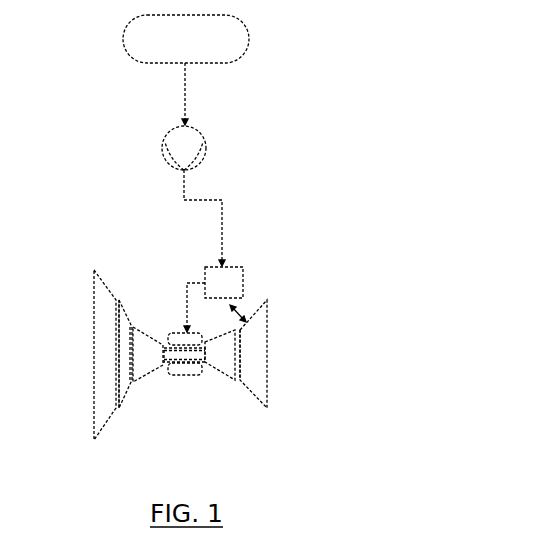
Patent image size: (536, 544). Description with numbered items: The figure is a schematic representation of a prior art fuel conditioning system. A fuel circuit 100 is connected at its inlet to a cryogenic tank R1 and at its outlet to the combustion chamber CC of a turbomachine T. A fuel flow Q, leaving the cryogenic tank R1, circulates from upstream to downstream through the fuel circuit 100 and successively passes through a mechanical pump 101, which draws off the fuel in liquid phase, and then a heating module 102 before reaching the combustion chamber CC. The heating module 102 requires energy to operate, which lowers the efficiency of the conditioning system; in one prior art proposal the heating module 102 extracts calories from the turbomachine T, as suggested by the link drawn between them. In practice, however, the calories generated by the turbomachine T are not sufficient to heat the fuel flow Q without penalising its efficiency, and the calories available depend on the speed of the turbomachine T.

The cryogenic tank R1 is at (249, 40).
The fuel circuit 100 is at (185, 97).
The mechanical pump 101 is at (206, 152).
The heating module 102 is at (243, 283).
The turbomachine T is at (77, 318).
The combustion chamber CC is at (181, 377).